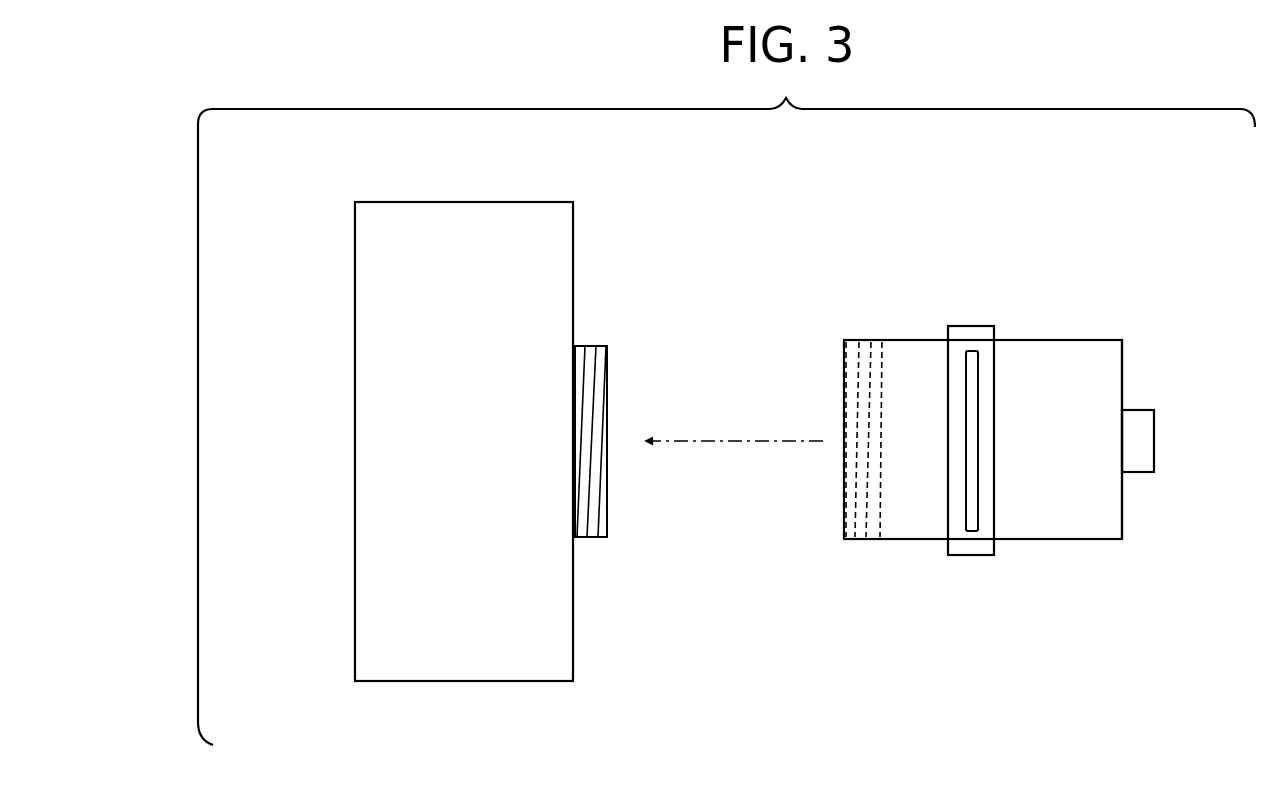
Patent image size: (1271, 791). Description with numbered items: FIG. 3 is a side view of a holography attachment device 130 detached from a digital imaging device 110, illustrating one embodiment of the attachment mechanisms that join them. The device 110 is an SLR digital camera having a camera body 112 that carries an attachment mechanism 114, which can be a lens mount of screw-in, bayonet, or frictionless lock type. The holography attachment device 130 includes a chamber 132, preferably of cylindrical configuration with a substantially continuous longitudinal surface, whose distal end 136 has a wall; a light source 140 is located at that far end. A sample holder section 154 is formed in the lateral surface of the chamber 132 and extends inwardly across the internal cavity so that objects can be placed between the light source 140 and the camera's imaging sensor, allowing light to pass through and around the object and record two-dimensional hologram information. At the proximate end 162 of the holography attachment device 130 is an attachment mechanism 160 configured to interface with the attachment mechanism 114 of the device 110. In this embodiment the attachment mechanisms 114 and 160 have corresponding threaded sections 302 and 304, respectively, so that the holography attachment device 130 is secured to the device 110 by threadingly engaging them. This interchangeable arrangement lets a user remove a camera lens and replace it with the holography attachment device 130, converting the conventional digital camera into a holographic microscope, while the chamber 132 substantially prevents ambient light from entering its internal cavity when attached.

The digital imaging device 110 is at (322, 292).
The camera body 112 is at (452, 202).
The attachment mechanism 114 is at (636, 389).
The threaded section 302 is at (603, 362).
The threaded section 304 is at (848, 446).
The attachment mechanism 160 is at (861, 555).
The proximate end 162 is at (820, 490).
The holography attachment device 130 is at (1023, 432).
The chamber 132 is at (1090, 347).
The distal end 136 is at (1139, 367).
The light source 140 is at (1138, 462).
The sample holder section 154 is at (971, 569).